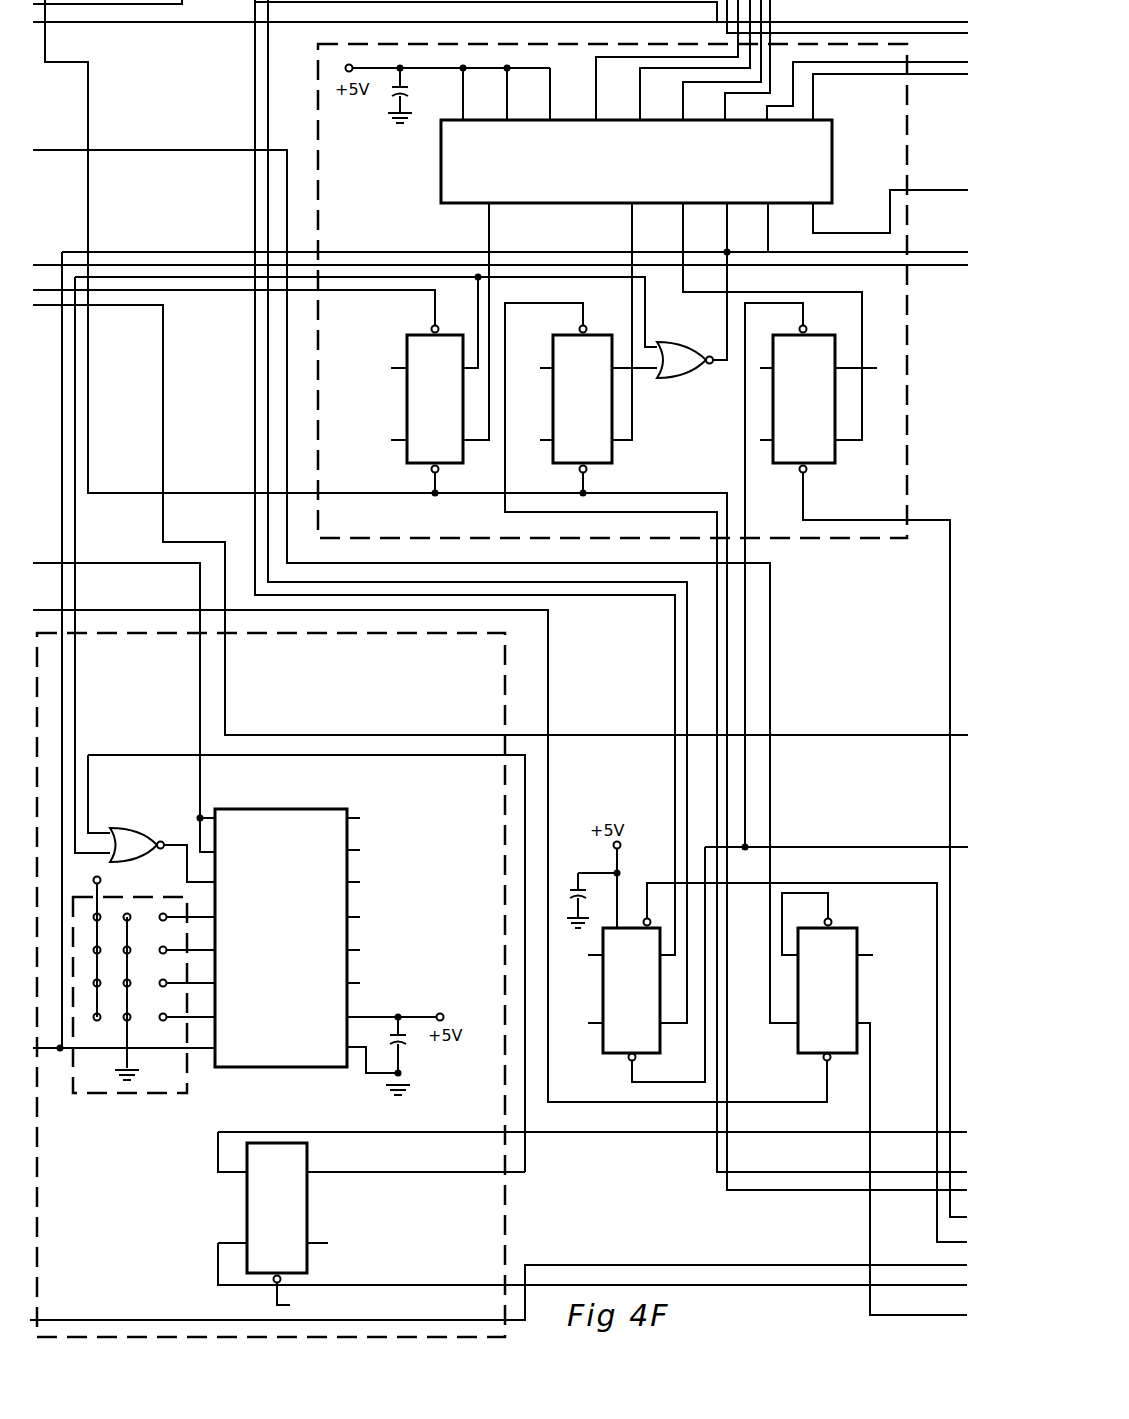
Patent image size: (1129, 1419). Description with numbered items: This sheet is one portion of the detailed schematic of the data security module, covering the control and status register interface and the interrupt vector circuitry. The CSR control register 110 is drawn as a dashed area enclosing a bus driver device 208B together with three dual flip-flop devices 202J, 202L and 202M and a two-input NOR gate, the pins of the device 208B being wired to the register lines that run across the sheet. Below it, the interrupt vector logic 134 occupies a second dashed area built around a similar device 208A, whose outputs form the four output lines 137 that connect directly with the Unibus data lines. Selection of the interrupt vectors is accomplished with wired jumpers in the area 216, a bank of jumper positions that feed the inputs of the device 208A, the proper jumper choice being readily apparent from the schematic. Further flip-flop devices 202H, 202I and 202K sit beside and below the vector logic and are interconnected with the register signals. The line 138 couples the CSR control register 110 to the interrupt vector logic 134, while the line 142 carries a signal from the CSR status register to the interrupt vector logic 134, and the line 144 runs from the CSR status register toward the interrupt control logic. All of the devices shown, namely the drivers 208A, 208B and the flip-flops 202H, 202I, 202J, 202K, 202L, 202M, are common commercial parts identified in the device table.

The CSR control register 110 is at (461, 246).
The interrupt vector logic 134 is at (392, 689).
The output lines 137 is at (423, 808).
The line 138 is at (143, 755).
The line 142 is at (212, 1055).
The line 144 is at (62, 674).
The interrupt vector selection area 216 is at (151, 1099).
The MC74LS368 device 208A is at (298, 809).
The MC74LS368 device 208B is at (577, 176).
The MC74LS74 device 202H is at (620, 1046).
The MC74LS74 device 202I is at (297, 1210).
The MC74LS74 device 202J is at (407, 351).
The MC74LS74 device 202K is at (816, 1046).
The MC74LS74 device 202L is at (608, 449).
The MC74LS74 device 202M is at (820, 456).